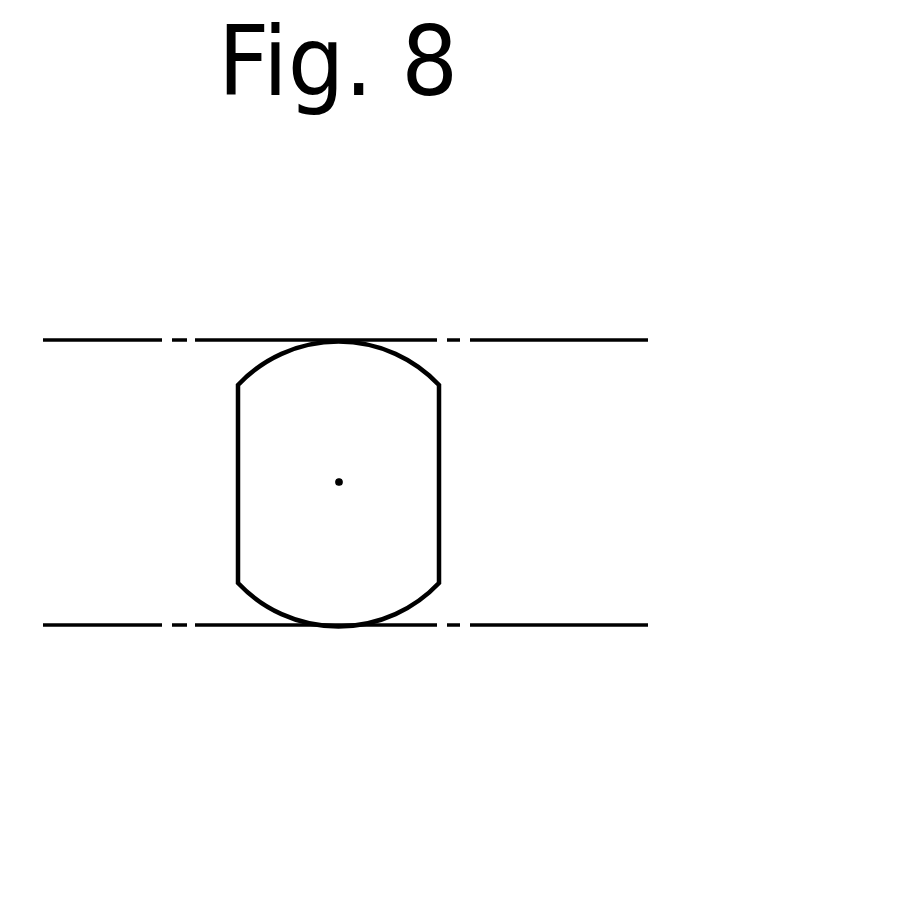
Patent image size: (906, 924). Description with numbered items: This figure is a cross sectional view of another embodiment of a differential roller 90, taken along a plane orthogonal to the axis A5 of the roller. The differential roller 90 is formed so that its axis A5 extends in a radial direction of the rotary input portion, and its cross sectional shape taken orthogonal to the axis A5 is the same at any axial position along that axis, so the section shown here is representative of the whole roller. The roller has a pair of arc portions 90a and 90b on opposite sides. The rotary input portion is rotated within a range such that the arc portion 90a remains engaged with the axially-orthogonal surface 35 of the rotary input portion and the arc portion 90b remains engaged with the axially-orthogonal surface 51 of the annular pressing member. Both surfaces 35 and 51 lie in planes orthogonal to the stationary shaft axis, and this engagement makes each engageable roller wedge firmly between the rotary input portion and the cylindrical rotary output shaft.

The differential roller 90 is at (370, 484).
The arc portion 90a is at (337, 340).
The arc portion 90b is at (335, 625).
The axis of the differential roller A5 is at (339, 486).
The axially-orthogonal surface 51 is at (587, 341).
The axially-orthogonal surface 35 is at (588, 624).